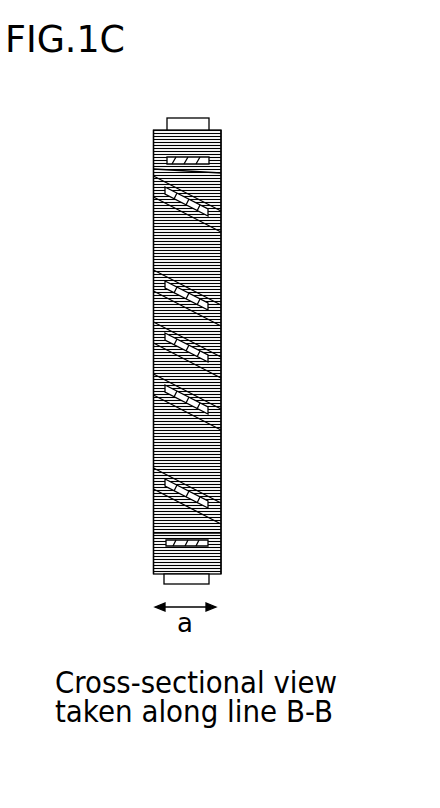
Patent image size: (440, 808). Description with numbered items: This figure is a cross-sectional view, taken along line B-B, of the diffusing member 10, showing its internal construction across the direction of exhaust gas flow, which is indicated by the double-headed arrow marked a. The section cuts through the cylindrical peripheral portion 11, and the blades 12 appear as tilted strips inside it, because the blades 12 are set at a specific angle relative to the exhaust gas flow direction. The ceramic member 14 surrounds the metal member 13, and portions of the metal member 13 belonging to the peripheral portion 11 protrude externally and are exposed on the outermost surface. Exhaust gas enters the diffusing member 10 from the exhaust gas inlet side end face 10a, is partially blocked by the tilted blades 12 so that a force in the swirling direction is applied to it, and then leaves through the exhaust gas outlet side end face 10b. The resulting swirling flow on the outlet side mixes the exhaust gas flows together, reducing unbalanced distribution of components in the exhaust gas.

The diffusing member 10 is at (246, 133).
The exhaust gas inlet side end face 10a is at (154, 245).
The exhaust gas outlet side end face 10b is at (221, 265).
The cylindrical peripheral portion 11 is at (208, 543).
The blades 12 is at (210, 411).
The metal member 13 is at (190, 122).
The ceramic member 14 is at (164, 143).